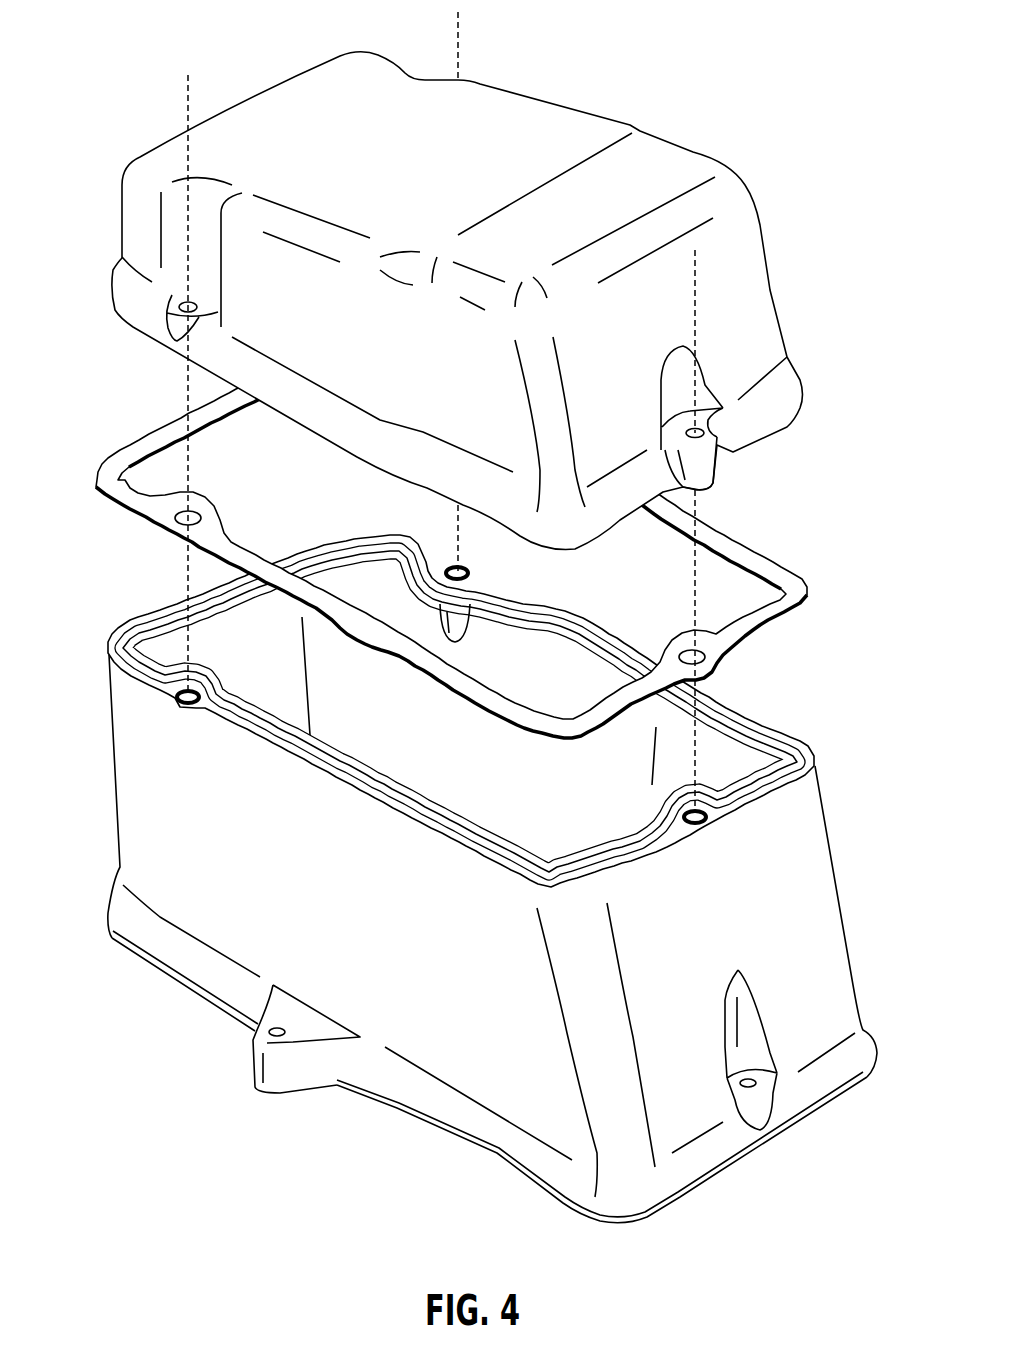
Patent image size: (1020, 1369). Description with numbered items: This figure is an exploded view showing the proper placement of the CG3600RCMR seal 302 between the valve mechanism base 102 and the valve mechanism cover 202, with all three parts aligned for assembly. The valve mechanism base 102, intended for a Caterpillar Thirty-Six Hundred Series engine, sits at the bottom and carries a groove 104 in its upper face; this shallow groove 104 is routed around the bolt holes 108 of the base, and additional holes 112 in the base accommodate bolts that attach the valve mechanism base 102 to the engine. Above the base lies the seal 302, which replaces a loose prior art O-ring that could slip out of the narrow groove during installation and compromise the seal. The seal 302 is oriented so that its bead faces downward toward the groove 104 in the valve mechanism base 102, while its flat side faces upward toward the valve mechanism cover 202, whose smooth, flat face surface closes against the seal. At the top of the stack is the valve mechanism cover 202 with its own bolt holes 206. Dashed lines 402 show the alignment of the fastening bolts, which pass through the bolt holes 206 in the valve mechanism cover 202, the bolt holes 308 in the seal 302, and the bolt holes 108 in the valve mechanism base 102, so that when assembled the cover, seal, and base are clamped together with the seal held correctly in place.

The valve mechanism base 102 is at (481, 879).
The groove 104 is at (481, 711).
The bolt holes 108 is at (470, 570).
The holes 112 is at (268, 1033).
The valve mechanism cover 202 is at (426, 301).
The bolt holes 206 is at (172, 315).
The CG3600RCMR seal 302 is at (487, 529).
The bolt holes 308 is at (175, 525).
The lines 402 is at (188, 93).